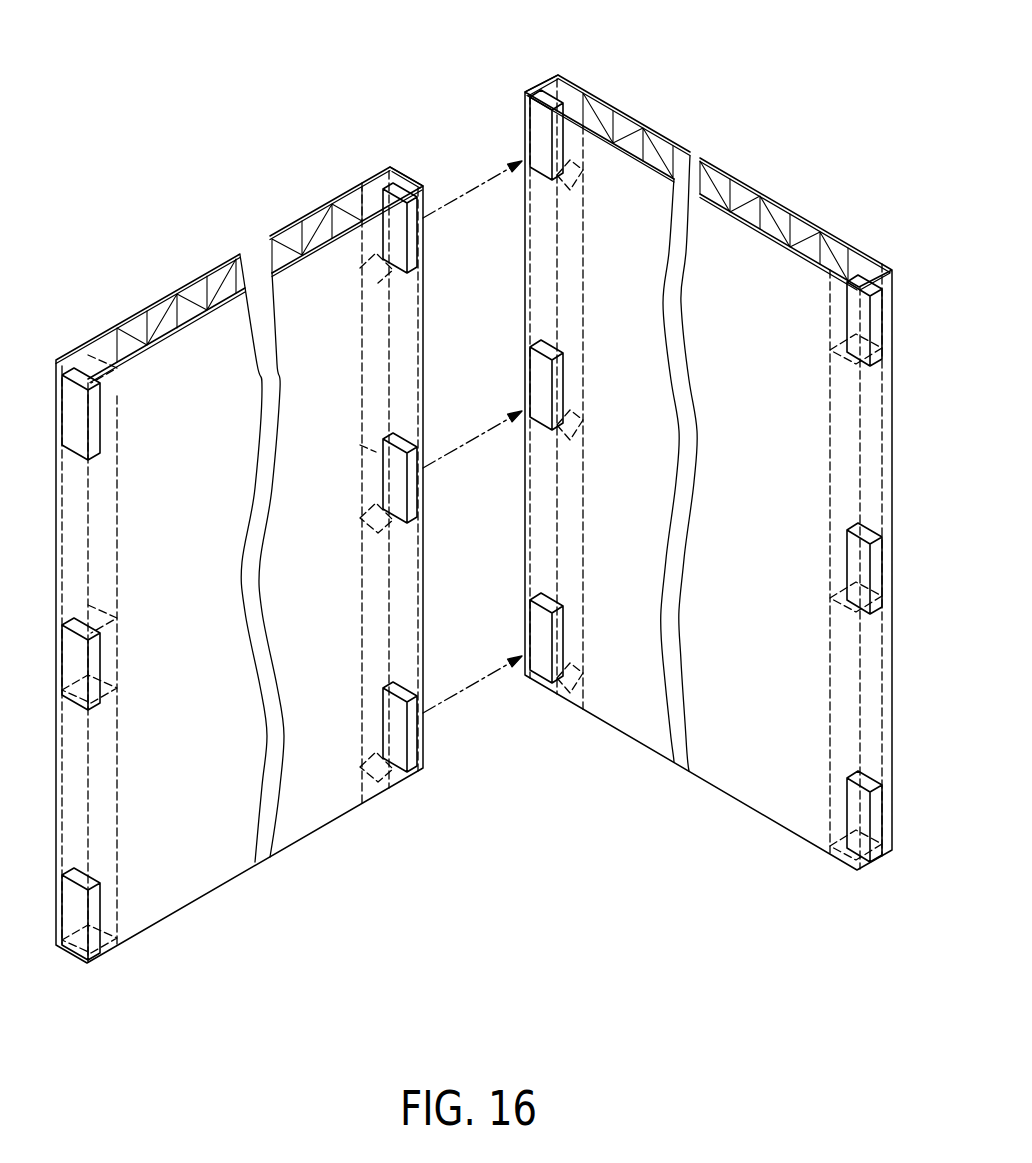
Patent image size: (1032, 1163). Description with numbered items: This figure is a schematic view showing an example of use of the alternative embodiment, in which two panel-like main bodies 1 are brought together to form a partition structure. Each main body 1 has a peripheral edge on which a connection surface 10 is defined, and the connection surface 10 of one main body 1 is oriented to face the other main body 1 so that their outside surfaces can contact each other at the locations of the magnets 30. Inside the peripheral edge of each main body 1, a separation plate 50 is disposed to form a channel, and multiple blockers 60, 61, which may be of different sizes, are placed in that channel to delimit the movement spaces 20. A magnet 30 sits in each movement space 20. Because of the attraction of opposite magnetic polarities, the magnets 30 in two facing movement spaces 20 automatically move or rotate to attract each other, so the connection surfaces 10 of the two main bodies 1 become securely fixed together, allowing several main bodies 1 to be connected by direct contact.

The main body 1 is at (352, 832).
The connection surface 10 is at (408, 178).
The movement space 20 is at (318, 210).
The magnet 30 is at (412, 243).
The separation plate 50 is at (364, 234).
The blocker 60 is at (405, 349).
The blocker 61 is at (383, 184).